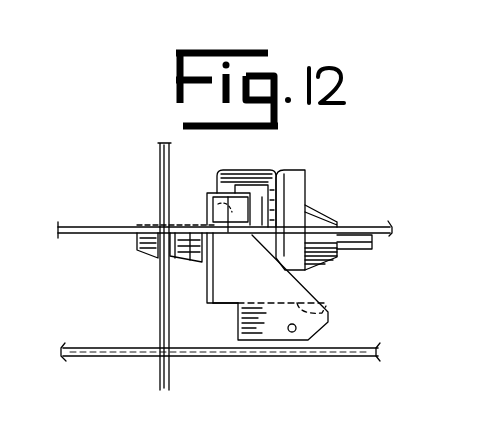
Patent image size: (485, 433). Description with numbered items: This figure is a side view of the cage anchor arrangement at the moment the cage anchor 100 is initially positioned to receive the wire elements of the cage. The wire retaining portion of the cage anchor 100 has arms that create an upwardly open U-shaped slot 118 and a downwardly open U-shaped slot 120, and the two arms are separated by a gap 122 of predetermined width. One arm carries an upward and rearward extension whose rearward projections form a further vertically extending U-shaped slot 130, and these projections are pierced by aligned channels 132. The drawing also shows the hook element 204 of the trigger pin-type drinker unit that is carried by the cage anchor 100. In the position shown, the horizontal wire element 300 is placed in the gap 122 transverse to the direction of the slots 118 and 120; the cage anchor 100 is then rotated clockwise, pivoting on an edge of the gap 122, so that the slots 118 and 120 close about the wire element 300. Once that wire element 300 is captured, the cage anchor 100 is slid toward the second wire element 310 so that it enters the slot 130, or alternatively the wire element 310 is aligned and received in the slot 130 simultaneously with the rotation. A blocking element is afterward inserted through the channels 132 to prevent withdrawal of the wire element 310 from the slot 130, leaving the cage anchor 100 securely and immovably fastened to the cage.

The cage anchor 100 is at (329, 294).
The U-shaped slot 118 is at (208, 212).
The U-shaped slot 120 is at (233, 280).
The gap 122 is at (228, 232).
The U-shaped slot 130 is at (333, 304).
The aligned channels 132 is at (296, 329).
The hook element 204 is at (231, 171).
The wire element 300 is at (320, 228).
The wire element 310 is at (160, 330).